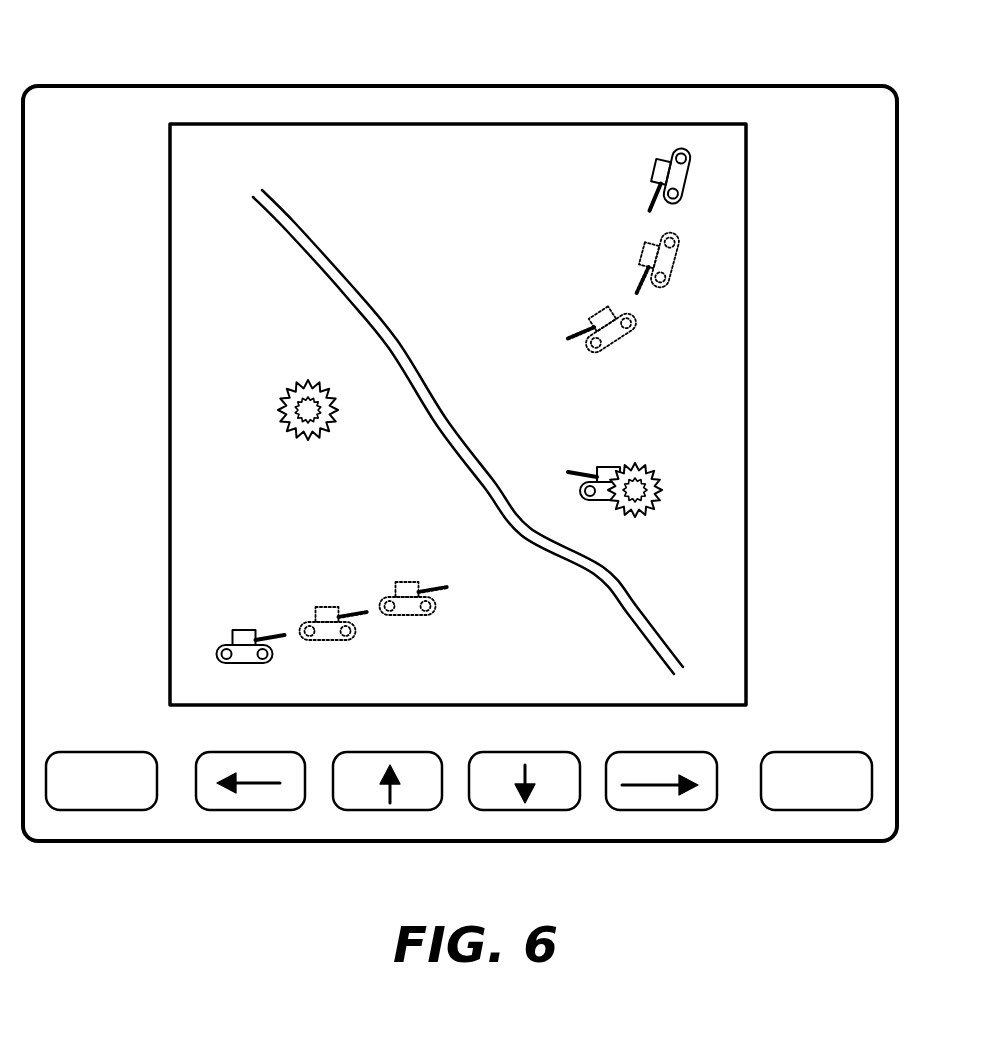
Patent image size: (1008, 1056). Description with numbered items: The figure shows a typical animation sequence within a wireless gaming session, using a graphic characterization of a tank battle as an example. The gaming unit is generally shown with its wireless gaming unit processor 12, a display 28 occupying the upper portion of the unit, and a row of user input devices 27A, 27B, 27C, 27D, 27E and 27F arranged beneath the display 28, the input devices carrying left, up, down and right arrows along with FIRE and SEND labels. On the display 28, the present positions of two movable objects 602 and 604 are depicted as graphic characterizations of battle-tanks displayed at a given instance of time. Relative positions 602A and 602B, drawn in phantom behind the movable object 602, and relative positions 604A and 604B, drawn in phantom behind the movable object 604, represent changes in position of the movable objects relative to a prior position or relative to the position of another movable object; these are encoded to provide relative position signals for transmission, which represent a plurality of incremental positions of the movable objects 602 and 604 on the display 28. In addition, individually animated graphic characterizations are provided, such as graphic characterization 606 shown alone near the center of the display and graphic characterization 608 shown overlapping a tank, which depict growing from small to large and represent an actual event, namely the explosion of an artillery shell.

The wireless gaming unit processor 12 is at (460, 440).
The display 28 is at (427, 414).
The movable object 602 is at (231, 628).
The relative position 602A is at (302, 605).
The relative position 602B is at (387, 580).
The movable object 604 is at (691, 177).
The relative position 604A is at (614, 256).
The relative position 604B is at (569, 322).
The graphic characterization 606 is at (283, 396).
The graphic characterization 608 is at (642, 470).
The user input device 27A is at (246, 765).
The user input device 27B is at (385, 765).
The user input device 27C is at (519, 765).
The user input device 27D is at (657, 765).
The user input device 27E is at (812, 763).
The user input device 27F is at (101, 763).